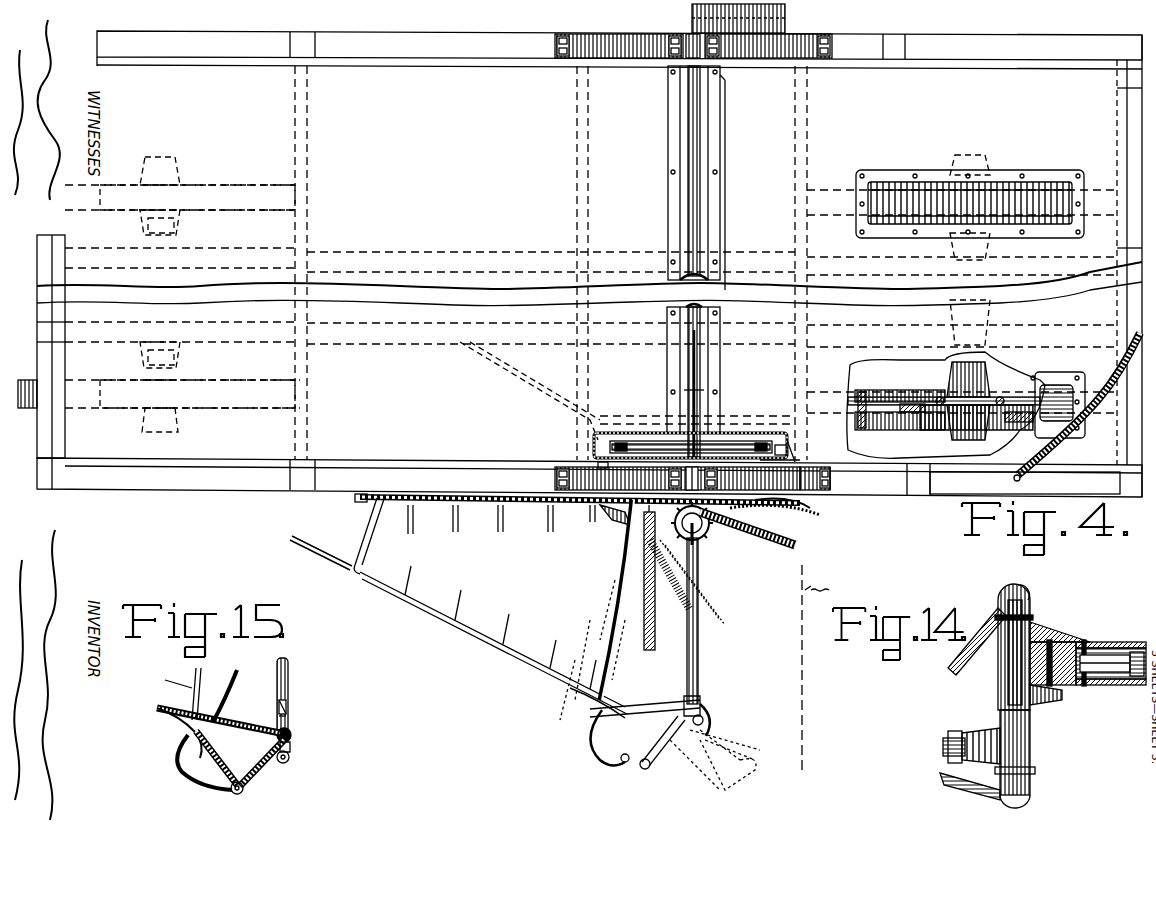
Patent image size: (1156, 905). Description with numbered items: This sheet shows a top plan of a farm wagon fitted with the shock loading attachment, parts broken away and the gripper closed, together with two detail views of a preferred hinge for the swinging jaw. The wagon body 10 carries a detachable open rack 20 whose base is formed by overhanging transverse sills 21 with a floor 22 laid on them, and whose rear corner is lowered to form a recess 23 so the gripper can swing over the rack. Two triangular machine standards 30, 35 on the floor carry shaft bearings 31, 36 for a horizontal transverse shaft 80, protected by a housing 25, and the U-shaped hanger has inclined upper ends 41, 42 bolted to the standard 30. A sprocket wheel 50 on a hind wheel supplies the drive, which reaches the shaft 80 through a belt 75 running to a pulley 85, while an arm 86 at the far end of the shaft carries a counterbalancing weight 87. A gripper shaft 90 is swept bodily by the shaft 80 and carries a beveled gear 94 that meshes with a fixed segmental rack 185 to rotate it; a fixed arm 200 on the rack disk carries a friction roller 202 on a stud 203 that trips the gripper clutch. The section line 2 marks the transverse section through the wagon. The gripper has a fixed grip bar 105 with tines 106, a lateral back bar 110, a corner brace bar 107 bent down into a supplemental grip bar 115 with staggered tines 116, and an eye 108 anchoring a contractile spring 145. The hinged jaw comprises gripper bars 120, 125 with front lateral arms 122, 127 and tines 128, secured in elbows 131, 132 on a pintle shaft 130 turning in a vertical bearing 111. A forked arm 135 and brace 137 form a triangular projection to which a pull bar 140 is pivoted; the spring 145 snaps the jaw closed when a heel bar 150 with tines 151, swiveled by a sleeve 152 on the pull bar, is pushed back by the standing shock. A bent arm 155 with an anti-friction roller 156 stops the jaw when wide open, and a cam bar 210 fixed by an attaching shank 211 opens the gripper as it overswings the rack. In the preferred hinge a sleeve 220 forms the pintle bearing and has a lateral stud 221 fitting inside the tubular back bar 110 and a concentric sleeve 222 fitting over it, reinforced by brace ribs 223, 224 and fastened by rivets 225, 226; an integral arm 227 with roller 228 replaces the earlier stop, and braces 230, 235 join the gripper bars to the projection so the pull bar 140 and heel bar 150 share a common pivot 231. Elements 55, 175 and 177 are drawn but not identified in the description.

In FIG. 4, the section line 2 is at (790, 34).
In FIG. 4, the wagon body 10 is at (345, 330).
In FIG. 4, the open rack 20 is at (420, 62).
In FIG. 4, the transverse sills 21 is at (580, 165).
In FIG. 4, the floor 22 is at (232, 85).
In FIG. 4, the recess 23 is at (976, 466).
In FIG. 4, the housing 25 is at (668, 318).
In FIG. 4, the machine standard 30 is at (620, 478).
In FIG. 4, the shaft bearing 31 is at (665, 478).
In FIG. 4, the machine standard 35 is at (622, 44).
In FIG. 4, the shaft bearing 36 is at (686, 50).
In FIG. 4, the inclined upper end of hanger 41 is at (560, 478).
In FIG. 4, the inclined upper end of hanger 42 is at (818, 492).
In FIG. 4, the sprocket wheel 50 is at (930, 420).
In FIG. 4, the worm 55 is at (876, 420).
In FIG. 4, the belt 75 is at (770, 440).
In FIG. 4, the transverse shaft 80 is at (705, 385).
In FIG. 4, the pulley 85 is at (645, 440).
In FIG. 4, the arm 86 is at (692, 28).
In FIG. 4, the weight 87 is at (738, 56).
In FIG. 4, the gripper shaft 90 is at (700, 545).
In FIG. 4, the beveled gear 94 is at (710, 537).
In FIG. 4, the grip bar 105 is at (435, 500).
In FIG. 4, the tines 106 is at (458, 515).
In FIG. 4, the corner brace bar 107 is at (610, 515).
In FIG. 4, the eye 108 is at (612, 468).
In FIG. 4, the back bar 110 is at (698, 604).
In FIG. 15, the back bar 110 is at (289, 678).
In FIG. 14, the back bar 110 is at (1110, 652).
In FIG. 4, the vertical bearing 111 is at (702, 708).
In FIG. 4, the supplemental grip bar 115 is at (358, 500).
In FIG. 4, the tines 116 is at (440, 520).
In FIG. 4, the gripper bar 120 is at (515, 616).
In FIG. 15, the gripper bar 120 is at (238, 728).
In FIG. 4, the lateral arm 122 is at (368, 532).
In FIG. 4, the gripper bar 125 is at (470, 622).
In FIG. 15, the gripper bar 125 is at (240, 740).
In FIG. 4, the lateral arm 127 is at (345, 560).
In FIG. 4, the lateral tines 128 is at (445, 600).
In FIG. 14, the pintle shaft 130 is at (1008, 672).
In FIG. 4, the elbow 131 is at (704, 718).
In FIG. 15, the elbow 131 is at (292, 728).
In FIG. 14, the elbow 131 is at (1030, 600).
In FIG. 14, the elbow 132 is at (1034, 771).
In FIG. 4, the forked arm 135 is at (648, 768).
In FIG. 4, the brace 137 is at (622, 758).
In FIG. 15, the brace 137 is at (210, 770).
In FIG. 4, the pull bar 140 is at (600, 742).
In FIG. 15, the pull bar 140 is at (224, 696).
In FIG. 4, the contractile spring 145 is at (642, 600).
In FIG. 4, the heel bar 150 is at (610, 640).
In FIG. 15, the heel bar 150 is at (200, 672).
In FIG. 4, the lateral tines 151 is at (625, 555).
In FIG. 4, the sleeve 152 is at (600, 705).
In FIG. 15, the sleeve 152 is at (185, 730).
In FIG. 4, the bent arm 155 is at (712, 728).
In FIG. 4, the anti-friction roller 156 is at (730, 746).
In FIG. 4, the chain 175 is at (785, 533).
In FIG. 4, the rack 177 is at (747, 528).
In FIG. 4, the fixed segmental rack 185 is at (790, 512).
In FIG. 4, the fixed arm 200 is at (787, 452).
In FIG. 4, the friction roller 202 is at (790, 496).
In FIG. 4, the stud 203 is at (790, 462).
In FIG. 4, the cam bar 210 is at (1096, 425).
In FIG. 4, the attaching shank 211 is at (1006, 483).
In FIG. 14, the sleeve 220 is at (998, 660).
In FIG. 14, the lateral stud 221 is at (1128, 676).
In FIG. 15, the sleeve 222 is at (287, 706).
In FIG. 14, the sleeve 222 is at (1085, 640).
In FIG. 15, the brace rib 223 is at (290, 716).
In FIG. 14, the brace rib 223 is at (1040, 632).
In FIG. 14, the brace rib 224 is at (1040, 700).
In FIG. 14, the rivet 225 is at (1052, 645).
In FIG. 14, the rivet 226 is at (1084, 648).
In FIG. 15, the integral arm 227 is at (292, 745).
In FIG. 14, the integral arm 227 is at (975, 738).
In FIG. 15, the anti-friction roller 228 is at (288, 760).
In FIG. 14, the anti-friction roller 228 is at (943, 748).
In FIG. 15, the brace 230 is at (255, 770).
In FIG. 14, the brace 230 is at (985, 620).
In FIG. 15, the pivot 231 is at (240, 790).
In FIG. 14, the brace 235 is at (960, 782).